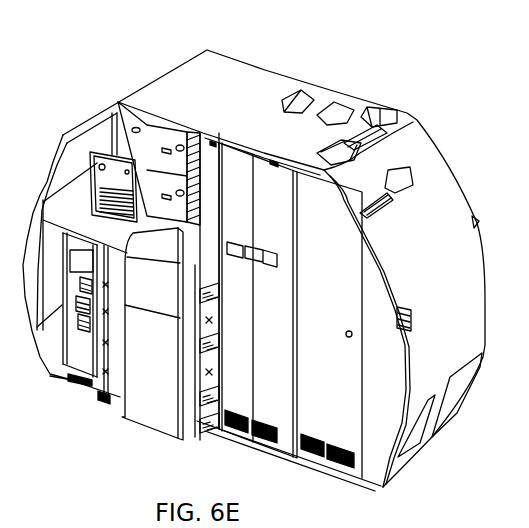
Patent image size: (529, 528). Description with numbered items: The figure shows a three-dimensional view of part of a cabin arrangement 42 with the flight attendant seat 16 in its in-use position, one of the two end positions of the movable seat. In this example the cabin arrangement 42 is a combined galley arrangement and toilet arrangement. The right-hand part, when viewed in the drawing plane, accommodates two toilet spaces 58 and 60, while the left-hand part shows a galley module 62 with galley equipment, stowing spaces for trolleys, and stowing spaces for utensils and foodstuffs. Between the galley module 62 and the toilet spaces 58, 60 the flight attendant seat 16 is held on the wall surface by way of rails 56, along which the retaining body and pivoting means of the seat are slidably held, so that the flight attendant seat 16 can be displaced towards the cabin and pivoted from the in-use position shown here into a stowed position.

The cabin arrangement 42 is at (366, 63).
The galley module 62 is at (173, 110).
The toilet space 58 is at (238, 178).
The toilet space 60 is at (351, 277).
The rails 56 is at (208, 286).
The flight attendant seat 16 is at (143, 416).